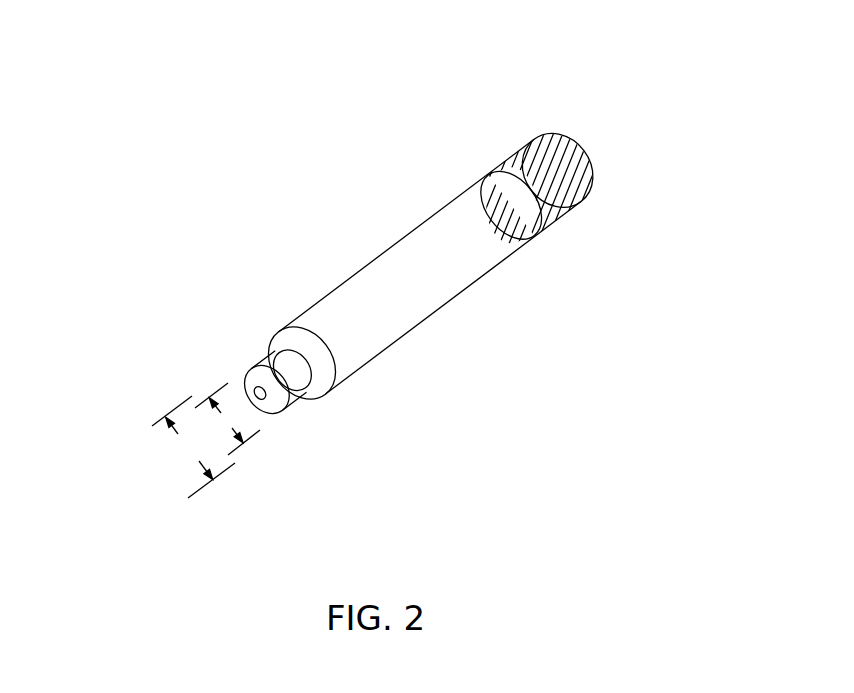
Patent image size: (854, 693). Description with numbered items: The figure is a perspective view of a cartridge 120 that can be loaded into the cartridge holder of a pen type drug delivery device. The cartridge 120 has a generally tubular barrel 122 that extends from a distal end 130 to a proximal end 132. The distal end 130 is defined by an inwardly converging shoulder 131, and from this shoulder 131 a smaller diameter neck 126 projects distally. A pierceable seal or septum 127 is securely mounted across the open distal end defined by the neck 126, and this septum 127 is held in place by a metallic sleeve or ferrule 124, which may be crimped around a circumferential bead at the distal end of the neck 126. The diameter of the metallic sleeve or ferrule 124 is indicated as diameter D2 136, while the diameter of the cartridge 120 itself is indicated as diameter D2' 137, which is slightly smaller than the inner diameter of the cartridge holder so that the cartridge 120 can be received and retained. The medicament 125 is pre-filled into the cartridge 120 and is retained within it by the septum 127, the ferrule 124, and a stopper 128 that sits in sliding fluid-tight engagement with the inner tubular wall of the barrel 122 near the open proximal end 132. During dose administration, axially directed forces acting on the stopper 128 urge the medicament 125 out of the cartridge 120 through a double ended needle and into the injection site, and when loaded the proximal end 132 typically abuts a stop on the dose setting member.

The cartridge 120 is at (463, 232).
The barrel 122 is at (478, 279).
The metallic sleeve or ferrule 124 is at (287, 402).
The medicament 125 is at (423, 304).
The neck 126 is at (253, 350).
The pierceable seal or septum 127 is at (254, 377).
The stopper 128 is at (534, 135).
The distal end 130 is at (257, 331).
The shoulder 131 is at (333, 385).
The proximal end 132 is at (588, 149).
The diameter D2 136 is at (260, 445).
The diameter D2' 137 is at (217, 482).